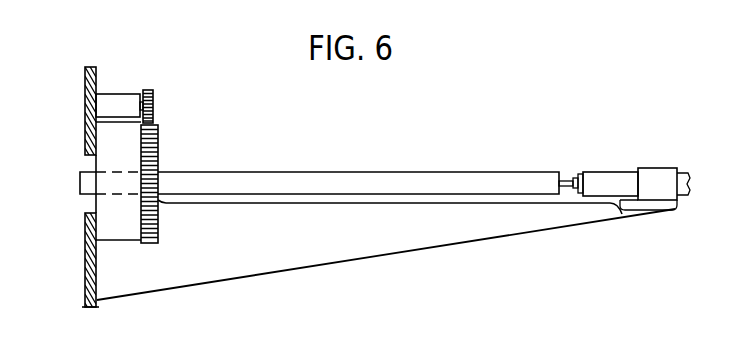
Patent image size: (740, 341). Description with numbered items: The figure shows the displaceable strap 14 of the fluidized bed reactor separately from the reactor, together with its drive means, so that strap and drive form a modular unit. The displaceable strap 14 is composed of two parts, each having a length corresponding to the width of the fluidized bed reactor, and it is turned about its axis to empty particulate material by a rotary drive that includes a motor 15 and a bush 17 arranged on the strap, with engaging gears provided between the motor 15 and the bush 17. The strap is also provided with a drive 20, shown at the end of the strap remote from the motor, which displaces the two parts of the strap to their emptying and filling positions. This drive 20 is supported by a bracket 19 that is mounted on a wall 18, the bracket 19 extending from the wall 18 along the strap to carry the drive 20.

The displaceable strap 14 is at (353, 182).
The motor 15 is at (120, 102).
The bush 17 is at (131, 152).
The wall 18 is at (83, 291).
The bracket 19 is at (338, 237).
The drive 20 is at (620, 180).